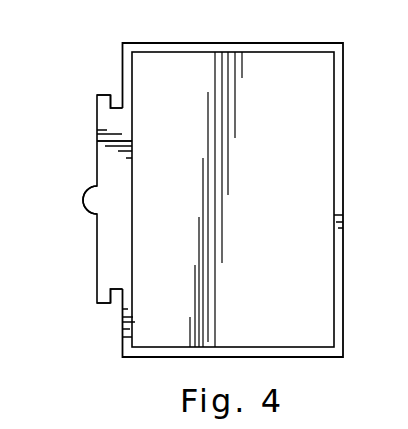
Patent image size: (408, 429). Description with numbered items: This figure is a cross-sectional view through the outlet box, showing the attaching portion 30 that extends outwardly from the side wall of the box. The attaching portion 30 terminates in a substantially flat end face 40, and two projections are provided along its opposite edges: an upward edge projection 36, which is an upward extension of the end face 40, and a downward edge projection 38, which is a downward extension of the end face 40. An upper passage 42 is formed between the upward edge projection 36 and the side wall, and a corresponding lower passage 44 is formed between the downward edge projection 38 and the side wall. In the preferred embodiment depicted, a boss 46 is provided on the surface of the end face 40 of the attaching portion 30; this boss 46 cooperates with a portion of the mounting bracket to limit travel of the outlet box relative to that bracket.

The attaching portion 30 is at (110, 230).
The upward edge projection 36 is at (105, 95).
The downward edge projection 38 is at (99, 304).
The end face 40 is at (97, 157).
The upper passage 42 is at (115, 100).
The lower passage 44 is at (117, 295).
The boss 46 is at (81, 201).